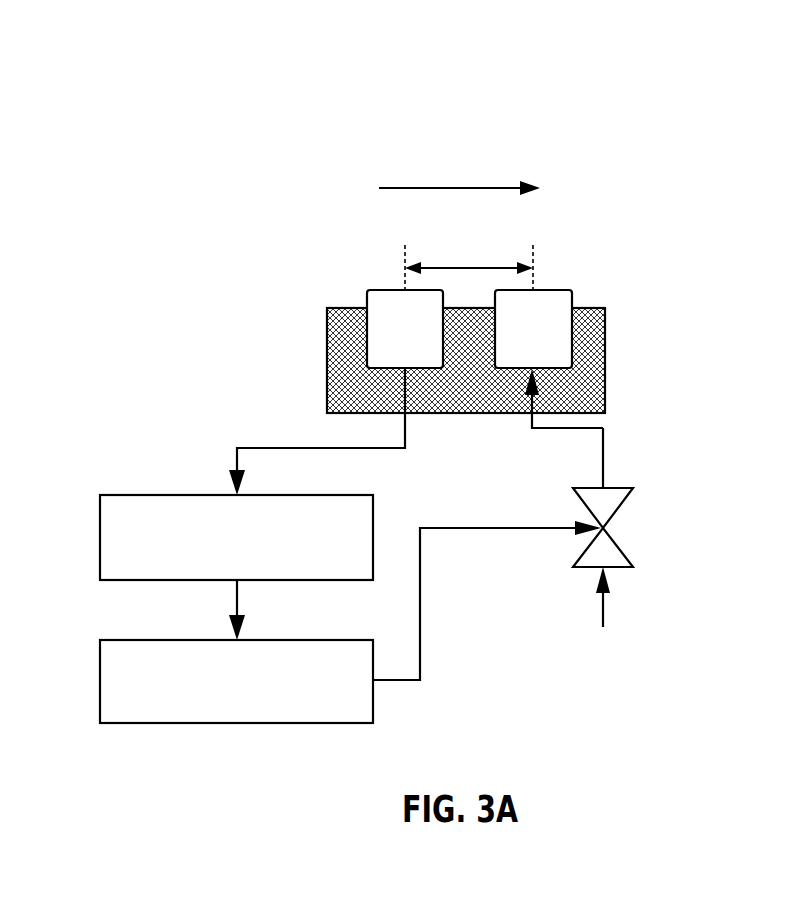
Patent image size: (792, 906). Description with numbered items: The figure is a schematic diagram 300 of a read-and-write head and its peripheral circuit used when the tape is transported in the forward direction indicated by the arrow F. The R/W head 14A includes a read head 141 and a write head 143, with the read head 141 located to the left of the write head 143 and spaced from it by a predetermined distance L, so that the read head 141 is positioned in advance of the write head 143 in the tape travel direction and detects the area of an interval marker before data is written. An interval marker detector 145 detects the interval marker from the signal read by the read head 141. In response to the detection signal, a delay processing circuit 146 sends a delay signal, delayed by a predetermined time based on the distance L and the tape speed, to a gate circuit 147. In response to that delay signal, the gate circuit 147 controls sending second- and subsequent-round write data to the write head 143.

The schematic diagram 300 is at (437, 119).
The read head 141 is at (366, 293).
The write head 143 is at (571, 293).
The R/W head 14A is at (605, 368).
The interval marker detector 145 is at (183, 495).
The delay processing circuit 146 is at (183, 640).
The gate circuit 147 is at (618, 543).